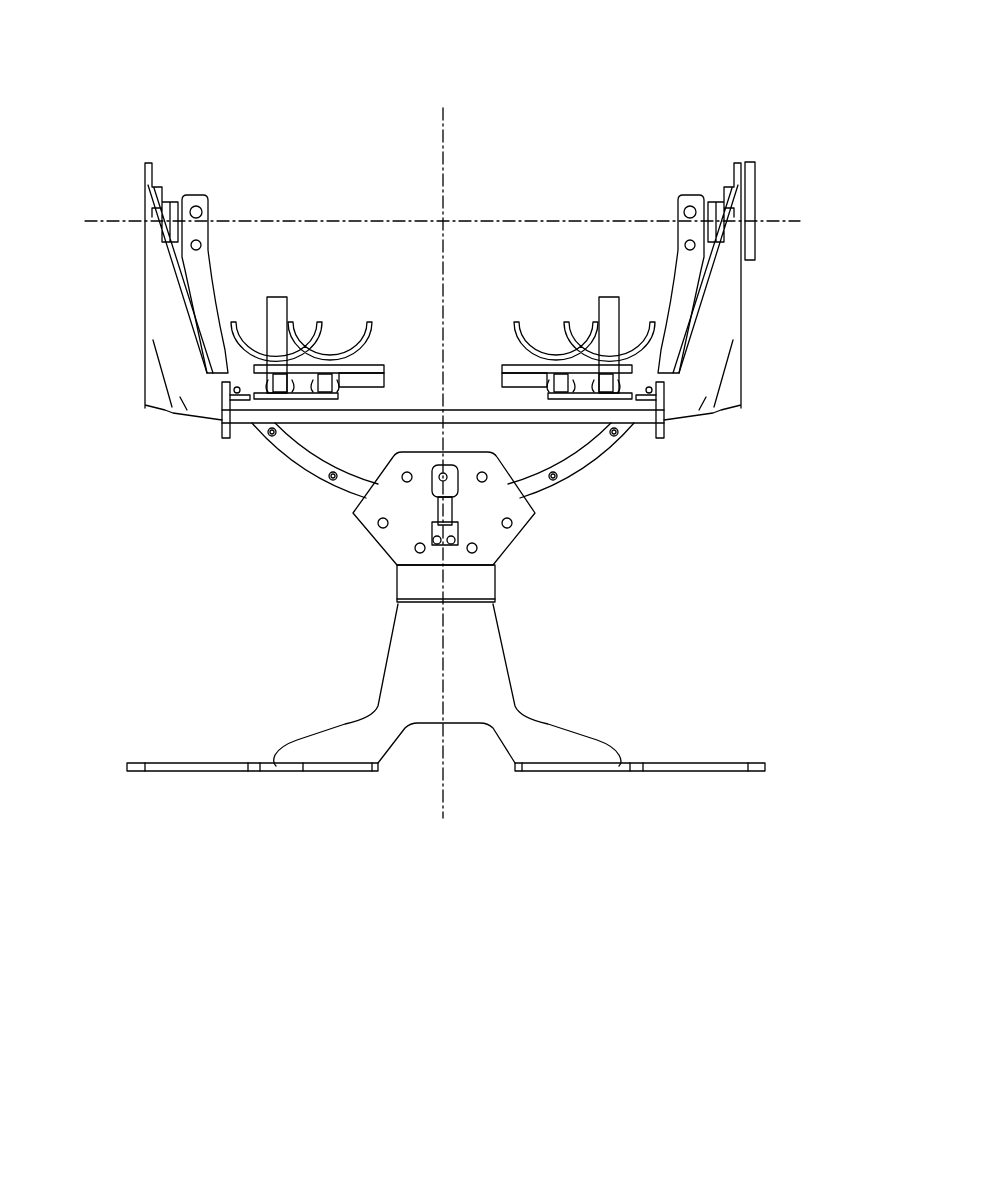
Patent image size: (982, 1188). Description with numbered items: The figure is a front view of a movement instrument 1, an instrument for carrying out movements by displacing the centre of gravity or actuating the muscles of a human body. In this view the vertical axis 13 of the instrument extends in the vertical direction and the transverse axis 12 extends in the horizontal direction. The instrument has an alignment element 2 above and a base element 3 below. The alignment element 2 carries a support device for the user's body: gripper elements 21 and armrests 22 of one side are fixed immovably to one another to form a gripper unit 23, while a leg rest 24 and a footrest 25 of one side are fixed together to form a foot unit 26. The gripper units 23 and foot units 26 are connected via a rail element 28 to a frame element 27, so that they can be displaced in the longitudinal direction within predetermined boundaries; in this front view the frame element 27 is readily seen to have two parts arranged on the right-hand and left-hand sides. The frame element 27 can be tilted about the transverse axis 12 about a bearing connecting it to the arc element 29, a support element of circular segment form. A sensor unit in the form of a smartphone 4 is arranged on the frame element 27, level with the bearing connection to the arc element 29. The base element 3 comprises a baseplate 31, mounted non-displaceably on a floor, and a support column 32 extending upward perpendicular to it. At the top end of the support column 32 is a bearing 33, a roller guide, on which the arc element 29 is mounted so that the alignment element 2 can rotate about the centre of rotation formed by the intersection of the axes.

The movement instrument 1 is at (456, 518).
The alignment element 2 is at (456, 429).
The base element 3 is at (446, 773).
The smartphone 4 is at (753, 257).
The transverse axis 12 is at (135, 220).
The vertical axis 13 is at (442, 137).
The gripper element 21 is at (278, 338).
The armrest 22 is at (245, 347).
The gripper unit 23 is at (279, 434).
The leg rest 24 is at (535, 347).
The footrest 25 is at (513, 367).
The foot unit 26 is at (568, 258).
The frame element 27 is at (712, 347).
The rail element 28 is at (250, 420).
The arc element 29 is at (198, 277).
The baseplate 31 is at (523, 770).
The support column 32 is at (435, 700).
The bearing 33 is at (478, 498).